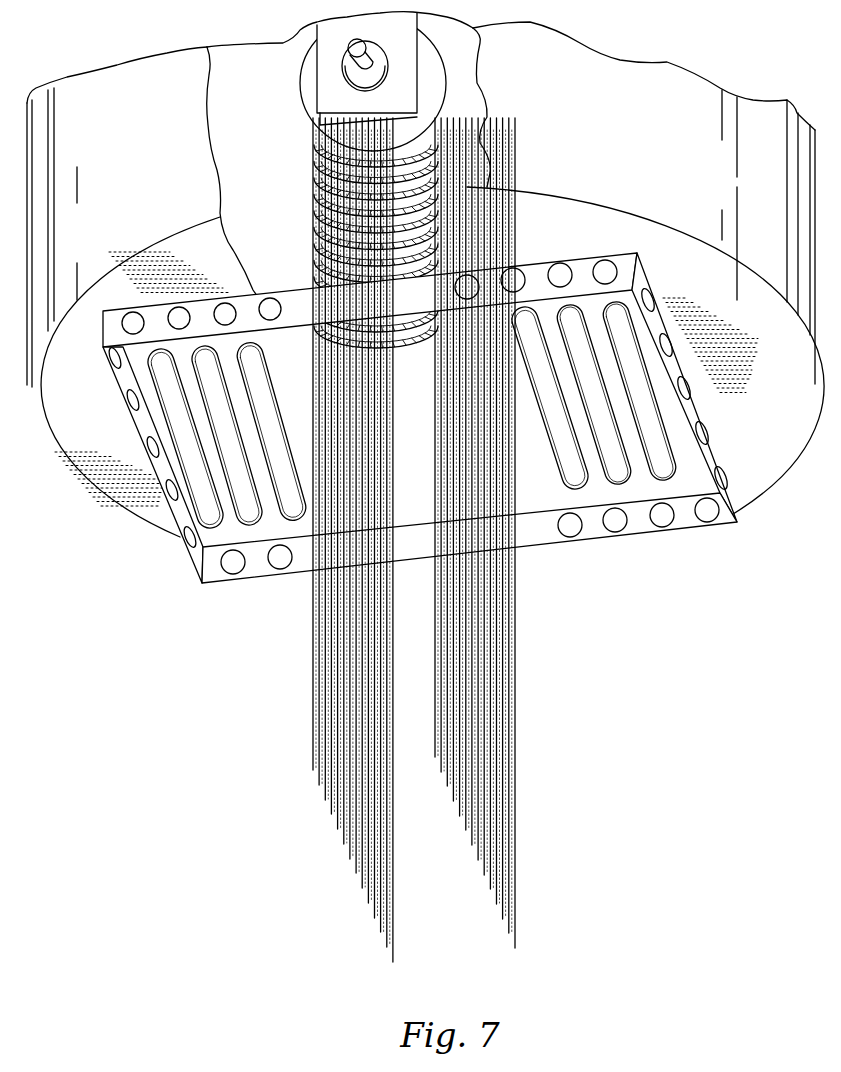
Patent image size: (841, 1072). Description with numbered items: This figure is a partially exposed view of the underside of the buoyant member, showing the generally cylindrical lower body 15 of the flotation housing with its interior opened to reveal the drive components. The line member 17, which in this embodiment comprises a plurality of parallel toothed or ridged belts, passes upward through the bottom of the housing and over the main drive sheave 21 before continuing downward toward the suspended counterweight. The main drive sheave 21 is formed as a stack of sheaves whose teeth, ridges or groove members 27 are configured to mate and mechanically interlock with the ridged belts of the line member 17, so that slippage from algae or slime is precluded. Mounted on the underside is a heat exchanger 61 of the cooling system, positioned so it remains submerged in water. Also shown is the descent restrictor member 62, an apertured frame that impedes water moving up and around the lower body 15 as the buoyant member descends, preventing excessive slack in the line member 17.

The lower body 15 is at (87, 427).
The line member 17 is at (313, 733).
The main drive sheave 21 is at (310, 72).
The groove members 27 is at (413, 140).
The heat exchanger 61 is at (253, 533).
The descent restrictor member 62 is at (553, 547).